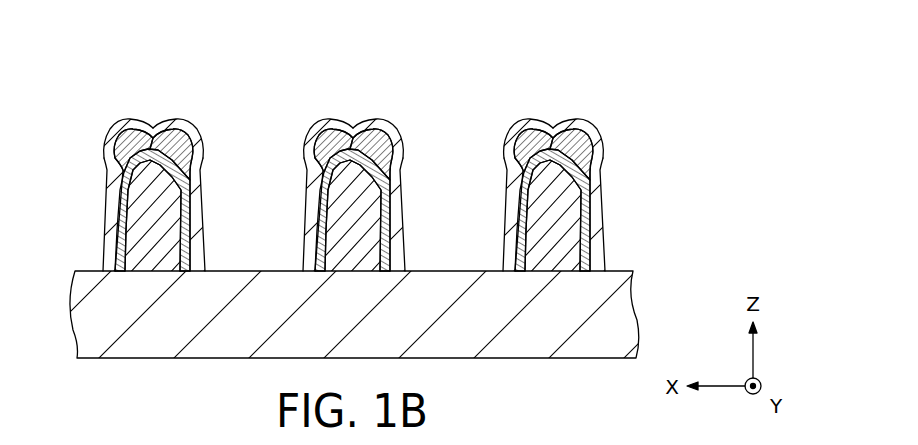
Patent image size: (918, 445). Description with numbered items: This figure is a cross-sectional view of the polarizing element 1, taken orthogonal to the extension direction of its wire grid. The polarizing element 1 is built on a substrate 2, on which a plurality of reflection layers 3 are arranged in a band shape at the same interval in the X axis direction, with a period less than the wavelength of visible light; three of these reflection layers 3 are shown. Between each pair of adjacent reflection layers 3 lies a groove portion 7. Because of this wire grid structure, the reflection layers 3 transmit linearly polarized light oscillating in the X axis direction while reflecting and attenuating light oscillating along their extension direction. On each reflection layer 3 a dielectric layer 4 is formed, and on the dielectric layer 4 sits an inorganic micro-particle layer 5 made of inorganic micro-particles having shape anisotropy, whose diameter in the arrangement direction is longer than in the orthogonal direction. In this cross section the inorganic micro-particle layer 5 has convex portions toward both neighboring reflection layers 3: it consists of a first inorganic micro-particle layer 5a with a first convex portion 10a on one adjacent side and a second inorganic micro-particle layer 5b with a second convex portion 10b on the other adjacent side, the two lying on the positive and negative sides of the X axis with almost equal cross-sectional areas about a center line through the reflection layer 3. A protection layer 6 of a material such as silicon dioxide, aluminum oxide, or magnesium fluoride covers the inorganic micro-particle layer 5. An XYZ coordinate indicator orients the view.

The polarizing element 1 is at (382, 187).
The substrate 2 is at (627, 312).
The reflection layer 3 is at (172, 210).
The dielectric layer 4 is at (189, 183).
The inorganic micro-particle layer 5 is at (353, 102).
The first inorganic micro-particle layer 5a is at (175, 128).
The second inorganic micro-particle layer 5b is at (139, 128).
The protection layer 6 is at (201, 142).
The groove portion 7 is at (253, 248).
The first convex portion 10a is at (203, 127).
The second convex portion 10b is at (109, 127).